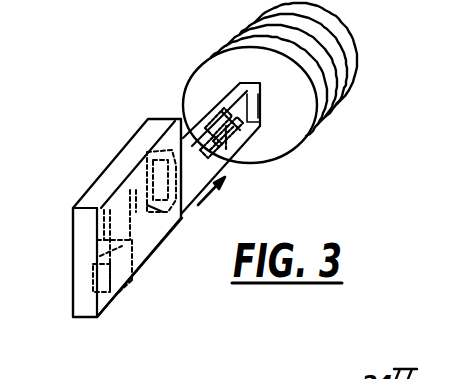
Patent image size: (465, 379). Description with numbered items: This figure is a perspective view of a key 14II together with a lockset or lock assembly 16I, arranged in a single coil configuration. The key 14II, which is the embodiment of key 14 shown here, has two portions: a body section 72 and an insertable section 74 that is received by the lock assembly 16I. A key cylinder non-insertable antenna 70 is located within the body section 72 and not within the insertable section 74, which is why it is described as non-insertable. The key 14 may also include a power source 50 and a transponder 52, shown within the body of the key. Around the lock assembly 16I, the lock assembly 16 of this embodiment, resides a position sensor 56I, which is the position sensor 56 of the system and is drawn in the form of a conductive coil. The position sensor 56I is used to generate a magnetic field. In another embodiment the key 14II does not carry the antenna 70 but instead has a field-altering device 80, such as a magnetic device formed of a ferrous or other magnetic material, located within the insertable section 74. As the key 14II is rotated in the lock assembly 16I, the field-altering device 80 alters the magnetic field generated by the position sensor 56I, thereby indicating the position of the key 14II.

The key 14II is at (118, 218).
The key 14 is at (103, 145).
The transponder 52 is at (75, 253).
The power source 50 is at (113, 280).
The body section 72 is at (147, 266).
The key cylinder non-insertable antenna 70 is at (184, 217).
The insertable section 74 is at (229, 120).
The field-altering device 80 is at (236, 140).
The lock assembly 16I is at (286, 110).
The lock assembly 16 is at (382, 155).
The position sensor 56I is at (313, 68).
The position sensor 56 is at (326, 25).